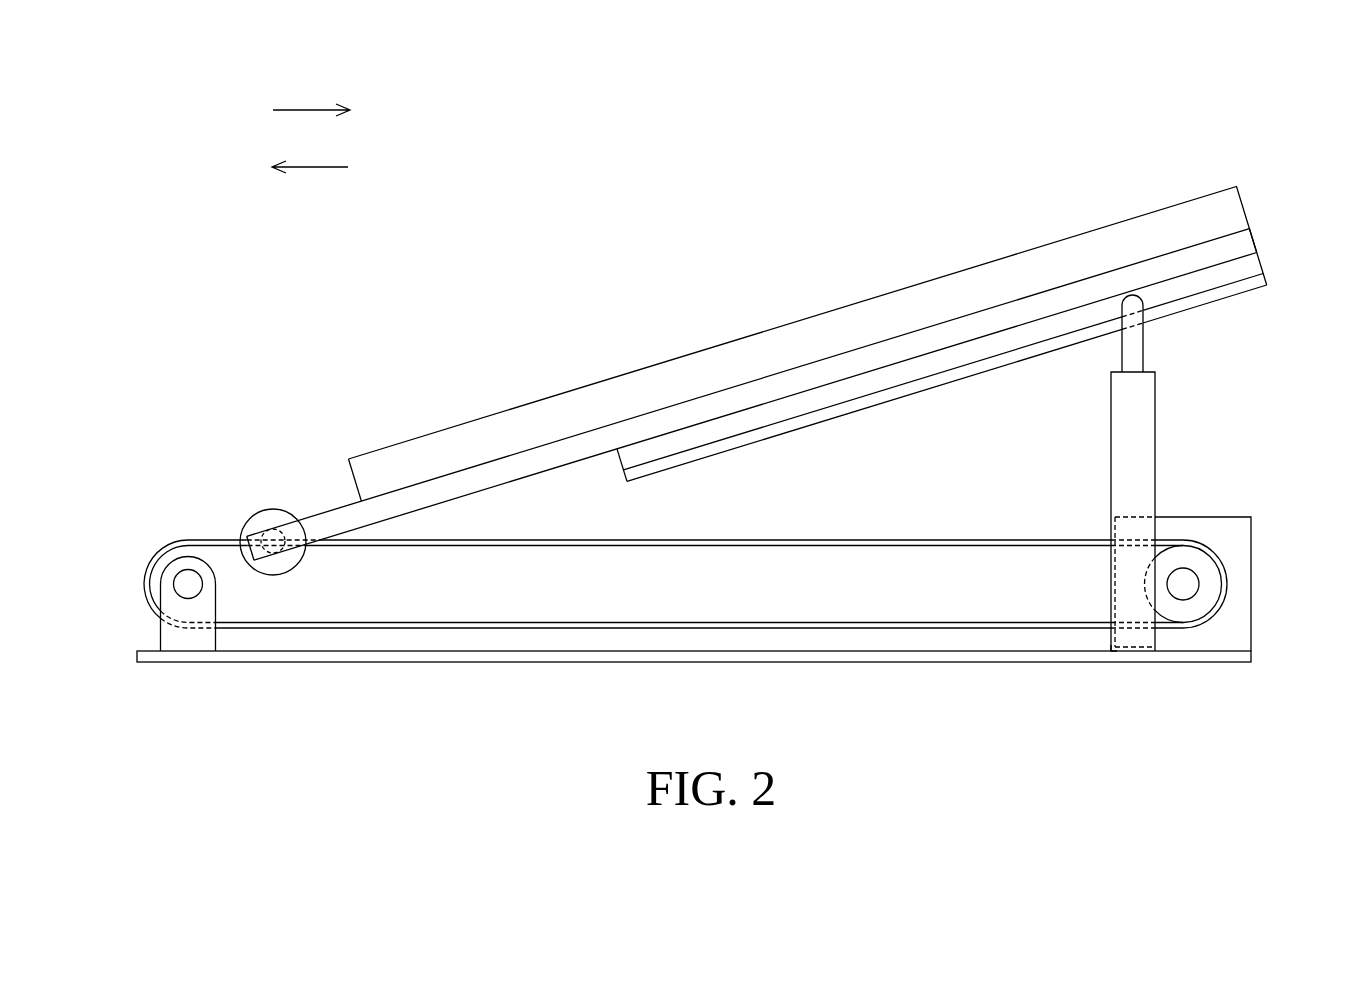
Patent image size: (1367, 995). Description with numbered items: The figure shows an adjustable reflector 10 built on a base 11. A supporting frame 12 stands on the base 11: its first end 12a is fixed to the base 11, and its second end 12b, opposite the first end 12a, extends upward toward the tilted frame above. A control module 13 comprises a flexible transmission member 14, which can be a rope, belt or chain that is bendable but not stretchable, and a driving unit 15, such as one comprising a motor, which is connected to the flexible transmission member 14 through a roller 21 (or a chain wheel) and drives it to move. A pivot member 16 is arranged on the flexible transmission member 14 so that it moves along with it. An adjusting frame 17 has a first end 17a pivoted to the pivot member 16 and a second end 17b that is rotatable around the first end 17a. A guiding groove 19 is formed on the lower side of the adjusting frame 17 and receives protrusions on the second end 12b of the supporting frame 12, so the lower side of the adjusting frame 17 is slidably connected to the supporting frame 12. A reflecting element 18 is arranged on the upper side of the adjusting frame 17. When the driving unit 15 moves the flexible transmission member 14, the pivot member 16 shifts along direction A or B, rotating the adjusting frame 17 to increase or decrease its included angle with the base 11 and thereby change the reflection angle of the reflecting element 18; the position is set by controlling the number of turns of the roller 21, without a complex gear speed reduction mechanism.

The adjustable reflector 10 is at (590, 178).
The base 11 is at (767, 661).
The supporting frame 12 is at (1122, 501).
The first end of the supporting frame 12a is at (1091, 647).
The second end of the supporting frame 12b is at (1162, 303).
The control module 13 is at (1205, 580).
The flexible transmission member 14 is at (512, 628).
The driving unit 15 is at (1230, 630).
The pivot member 16 is at (283, 567).
The adjusting frame 17 is at (791, 357).
The first end of the adjusting frame 17a is at (270, 528).
The second end of the adjusting frame 17b is at (1268, 228).
The reflecting element 18 is at (1218, 205).
The guiding groove 19 is at (1258, 262).
The roller 21 is at (1173, 610).